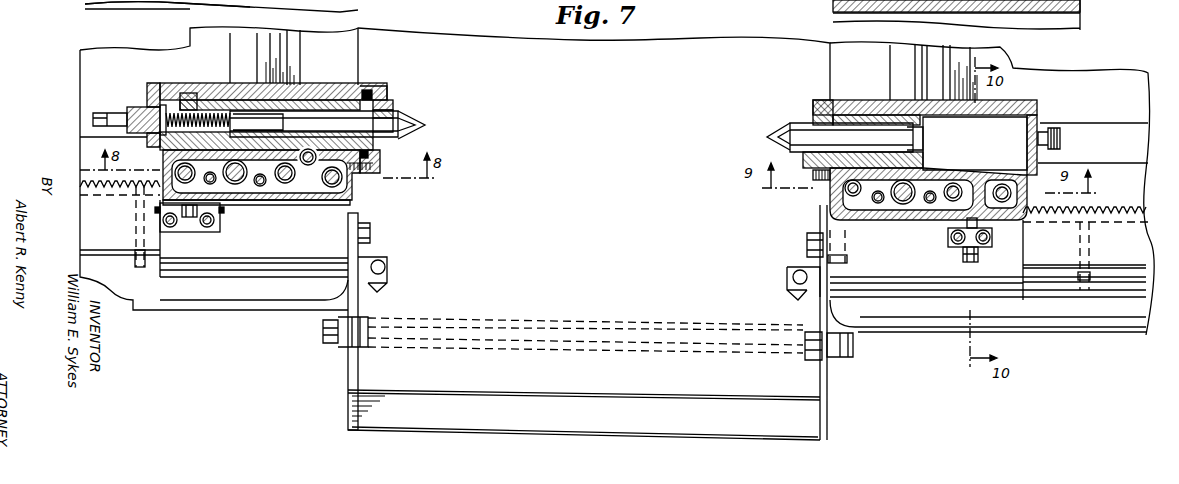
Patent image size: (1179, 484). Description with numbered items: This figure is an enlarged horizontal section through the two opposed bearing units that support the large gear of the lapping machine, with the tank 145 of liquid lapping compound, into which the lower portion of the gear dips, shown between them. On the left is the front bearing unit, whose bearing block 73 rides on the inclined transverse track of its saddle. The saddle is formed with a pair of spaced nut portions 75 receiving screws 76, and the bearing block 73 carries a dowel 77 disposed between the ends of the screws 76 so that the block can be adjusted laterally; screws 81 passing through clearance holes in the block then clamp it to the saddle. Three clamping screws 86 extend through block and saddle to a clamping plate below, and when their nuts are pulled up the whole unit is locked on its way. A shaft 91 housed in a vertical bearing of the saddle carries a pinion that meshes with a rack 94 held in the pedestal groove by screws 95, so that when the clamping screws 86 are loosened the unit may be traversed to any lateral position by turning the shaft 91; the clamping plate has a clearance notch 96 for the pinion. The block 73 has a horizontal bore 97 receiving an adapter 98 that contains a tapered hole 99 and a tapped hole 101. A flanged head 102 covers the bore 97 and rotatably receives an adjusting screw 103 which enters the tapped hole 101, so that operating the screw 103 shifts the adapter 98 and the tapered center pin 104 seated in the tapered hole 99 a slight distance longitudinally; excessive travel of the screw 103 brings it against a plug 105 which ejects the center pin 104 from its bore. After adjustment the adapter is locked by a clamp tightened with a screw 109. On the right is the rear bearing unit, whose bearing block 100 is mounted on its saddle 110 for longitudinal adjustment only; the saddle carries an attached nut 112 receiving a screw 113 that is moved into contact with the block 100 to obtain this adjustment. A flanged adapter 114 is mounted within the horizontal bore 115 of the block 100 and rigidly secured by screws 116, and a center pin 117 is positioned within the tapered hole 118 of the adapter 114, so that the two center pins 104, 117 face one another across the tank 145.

The bearing block 73 is at (340, 100).
The nut portions 75 is at (200, 215).
The screws 76 is at (200, 210).
The dowel 77 is at (189, 218).
The screws 81 is at (283, 202).
The clamping screws 86 is at (341, 180).
The shaft 91 is at (282, 124).
The rack 94 is at (88, 173).
The screws 95 is at (83, 292).
The clearance notch 96 is at (197, 2).
The horizontal bore 97 is at (367, 92).
The adapter 98 is at (390, 110).
The tapered hole 99 is at (393, 118).
The bearing block 100 is at (843, 100).
The tapped hole 101 is at (190, 108).
The flanged head 102 is at (157, 100).
The adjusting screw 103 is at (93, 117).
The tapered center pin 104 is at (413, 121).
The plug 105 is at (295, 45).
The screw 109 is at (380, 153).
The saddle 110 is at (1023, 298).
The nut 112 is at (957, 253).
The screw 113 is at (987, 262).
The flanged adapter 114 is at (813, 103).
The horizontal bore 115 is at (817, 118).
The screws 116 is at (813, 173).
The center pin 117 is at (777, 138).
The tapered hole 118 is at (787, 127).
The tank 145 is at (587, 322).